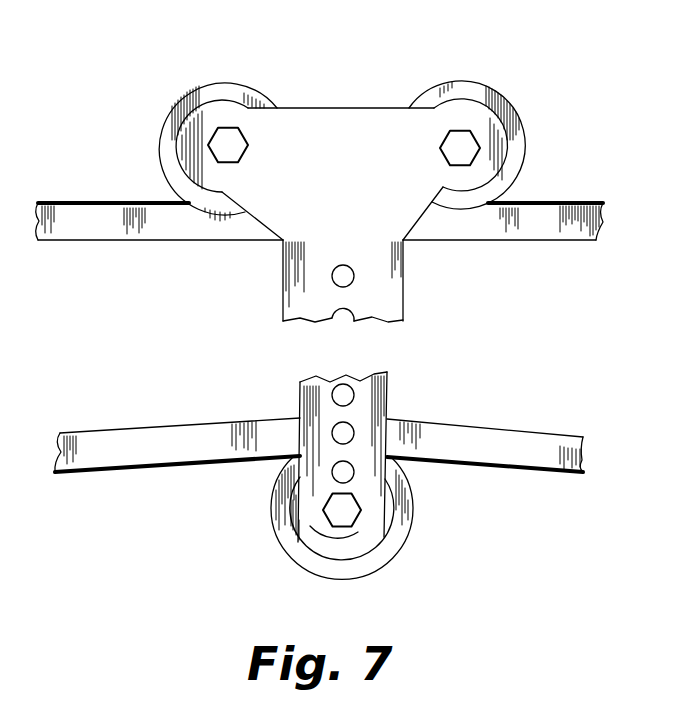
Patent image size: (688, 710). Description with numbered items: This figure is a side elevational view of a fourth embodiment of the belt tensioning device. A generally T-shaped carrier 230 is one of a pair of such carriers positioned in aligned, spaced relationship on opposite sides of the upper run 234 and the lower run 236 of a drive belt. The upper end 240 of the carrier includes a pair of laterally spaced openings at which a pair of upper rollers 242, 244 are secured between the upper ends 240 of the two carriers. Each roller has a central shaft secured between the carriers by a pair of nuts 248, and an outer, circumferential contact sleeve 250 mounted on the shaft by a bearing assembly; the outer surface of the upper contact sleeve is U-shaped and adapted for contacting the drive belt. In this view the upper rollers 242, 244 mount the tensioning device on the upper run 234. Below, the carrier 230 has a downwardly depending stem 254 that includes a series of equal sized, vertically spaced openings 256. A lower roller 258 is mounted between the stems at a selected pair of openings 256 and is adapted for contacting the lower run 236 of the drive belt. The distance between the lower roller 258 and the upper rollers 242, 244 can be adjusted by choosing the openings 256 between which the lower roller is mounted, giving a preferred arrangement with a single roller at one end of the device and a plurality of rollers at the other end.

The carrier 230 is at (409, 261).
The upper run 234 is at (577, 202).
The lower run 236 is at (560, 440).
The upper end 240 is at (350, 126).
The upper roller 242 is at (200, 80).
The upper roller 244 is at (498, 82).
The nut 248 is at (212, 146).
The contact sleeve 250 is at (237, 88).
The stem 254 is at (300, 400).
The opening 256 is at (354, 276).
The lower roller 258 is at (281, 549).